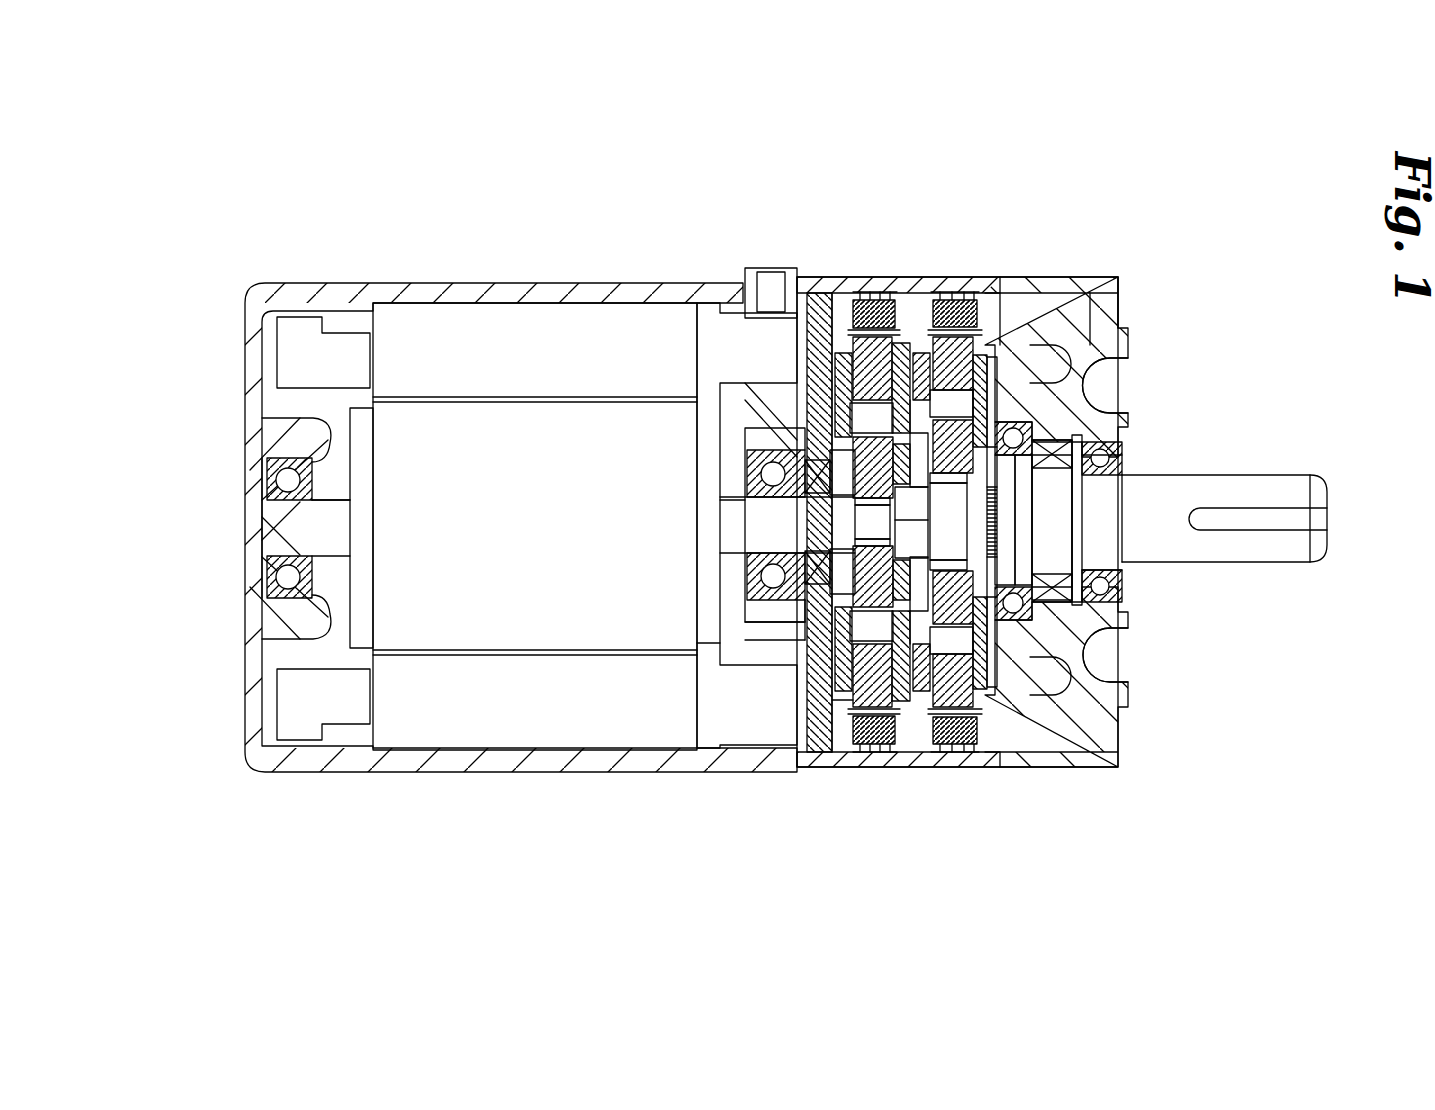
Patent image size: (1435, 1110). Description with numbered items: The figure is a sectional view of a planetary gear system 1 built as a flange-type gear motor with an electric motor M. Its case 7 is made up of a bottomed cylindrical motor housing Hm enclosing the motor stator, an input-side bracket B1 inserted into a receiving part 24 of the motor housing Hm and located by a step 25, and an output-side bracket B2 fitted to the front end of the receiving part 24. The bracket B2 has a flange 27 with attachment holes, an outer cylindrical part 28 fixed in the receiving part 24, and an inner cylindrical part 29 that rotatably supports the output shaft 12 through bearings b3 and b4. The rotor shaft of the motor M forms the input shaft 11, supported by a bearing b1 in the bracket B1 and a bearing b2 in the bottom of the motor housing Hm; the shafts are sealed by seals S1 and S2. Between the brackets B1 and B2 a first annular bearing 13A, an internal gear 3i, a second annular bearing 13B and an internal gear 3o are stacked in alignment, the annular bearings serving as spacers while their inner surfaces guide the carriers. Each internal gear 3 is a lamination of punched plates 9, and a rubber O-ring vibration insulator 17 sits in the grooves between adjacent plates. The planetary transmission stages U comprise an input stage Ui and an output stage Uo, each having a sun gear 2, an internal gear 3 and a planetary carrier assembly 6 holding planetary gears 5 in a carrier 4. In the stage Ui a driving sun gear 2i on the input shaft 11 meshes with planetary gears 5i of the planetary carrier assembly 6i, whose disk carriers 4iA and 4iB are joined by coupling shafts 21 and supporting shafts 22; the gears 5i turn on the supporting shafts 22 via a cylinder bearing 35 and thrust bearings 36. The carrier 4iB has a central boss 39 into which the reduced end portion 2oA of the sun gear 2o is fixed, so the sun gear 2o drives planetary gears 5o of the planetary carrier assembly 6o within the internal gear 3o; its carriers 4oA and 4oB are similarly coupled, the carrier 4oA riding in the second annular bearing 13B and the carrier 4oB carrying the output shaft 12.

The planetary gear system 1 is at (943, 108).
The motor housing Hm is at (418, 283).
The electric motor M is at (487, 280).
The bearing b1 is at (758, 455).
The bearing b2 is at (262, 410).
The bearing b3 is at (1030, 420).
The bearing b4 is at (1133, 458).
The bracket B1 is at (798, 418).
The bracket B2 is at (1125, 315).
The first annular bearing 13A is at (825, 283).
The second annular bearing 13B is at (920, 330).
The planetary transmission stage U is at (900, 82).
The input-side planetary transmission stage Ui is at (860, 270).
The output-side planetary transmission stage Uo is at (942, 270).
The planetary carrier assembly 6 is at (912, 207).
The planetary carrier assembly 6i is at (888, 277).
The planetary carrier assembly 6o is at (917, 277).
The planetary gears 5 is at (1000, 207).
The planetary gears 5i is at (1008, 277).
The planetary gears 5o is at (1060, 277).
The punched plates 9 is at (847, 277).
The sun gear 2 is at (723, 832).
The driving sun gear 2i is at (875, 575).
The sun gear 2o is at (905, 575).
The reduced end portion 2oA is at (1000, 503).
The internal gear 3 is at (858, 834).
The internal gear 3i is at (878, 755).
The internal gear 3o is at (920, 755).
The carrier 4 is at (1235, 834).
The carrier 4iA is at (1000, 735).
The carrier 4iB is at (1010, 720).
The carrier 4oA is at (1025, 720).
The carrier 4oB is at (1045, 700).
The case 7 is at (1003, 768).
The input shaft 11 is at (790, 515).
The output shaft 12 is at (1227, 473).
The vibration insulator 17 is at (950, 755).
The coupling shafts 21 is at (920, 610).
The supporting shafts 22 is at (1095, 300).
The receiving part 24 is at (1030, 340).
The step 25 is at (840, 705).
The flange 27 is at (1115, 290).
The outer cylindrical part 28 is at (1060, 320).
The inner cylindrical part 29 is at (1115, 410).
The cylinder bearing 35 is at (860, 500).
The thrust bearings 36 is at (855, 440).
The boss 39 is at (850, 590).
The seal S1 is at (860, 520).
The seal S2 is at (1055, 545).